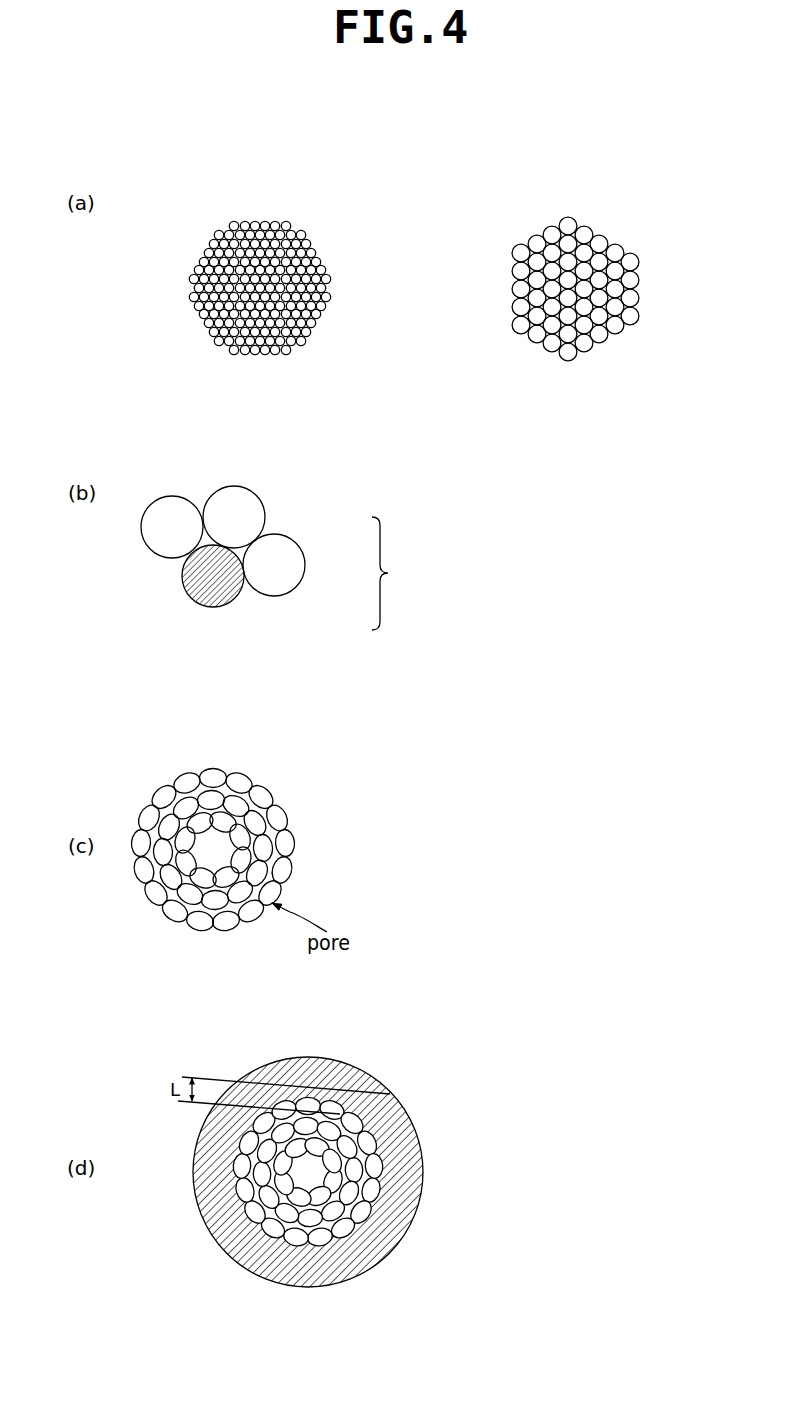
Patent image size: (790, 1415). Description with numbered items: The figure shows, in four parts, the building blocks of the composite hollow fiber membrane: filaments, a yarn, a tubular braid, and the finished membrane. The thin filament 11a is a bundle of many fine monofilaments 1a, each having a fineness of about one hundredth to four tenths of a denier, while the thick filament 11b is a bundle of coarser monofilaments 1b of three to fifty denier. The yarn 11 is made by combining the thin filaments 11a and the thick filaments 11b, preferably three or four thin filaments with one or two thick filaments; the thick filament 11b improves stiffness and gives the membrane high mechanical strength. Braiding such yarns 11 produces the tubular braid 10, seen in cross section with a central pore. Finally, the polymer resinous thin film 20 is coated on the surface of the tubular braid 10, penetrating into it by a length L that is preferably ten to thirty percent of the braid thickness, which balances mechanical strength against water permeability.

The thin filament 11a is at (312, 220).
The monofilament 1a is at (313, 270).
The thick filament 11b is at (624, 220).
The monofilament 1b is at (630, 279).
The yarn 11 is at (352, 1115).
The tubular braid 10 is at (286, 790).
The polymer resinous thin film 20 is at (400, 1132).